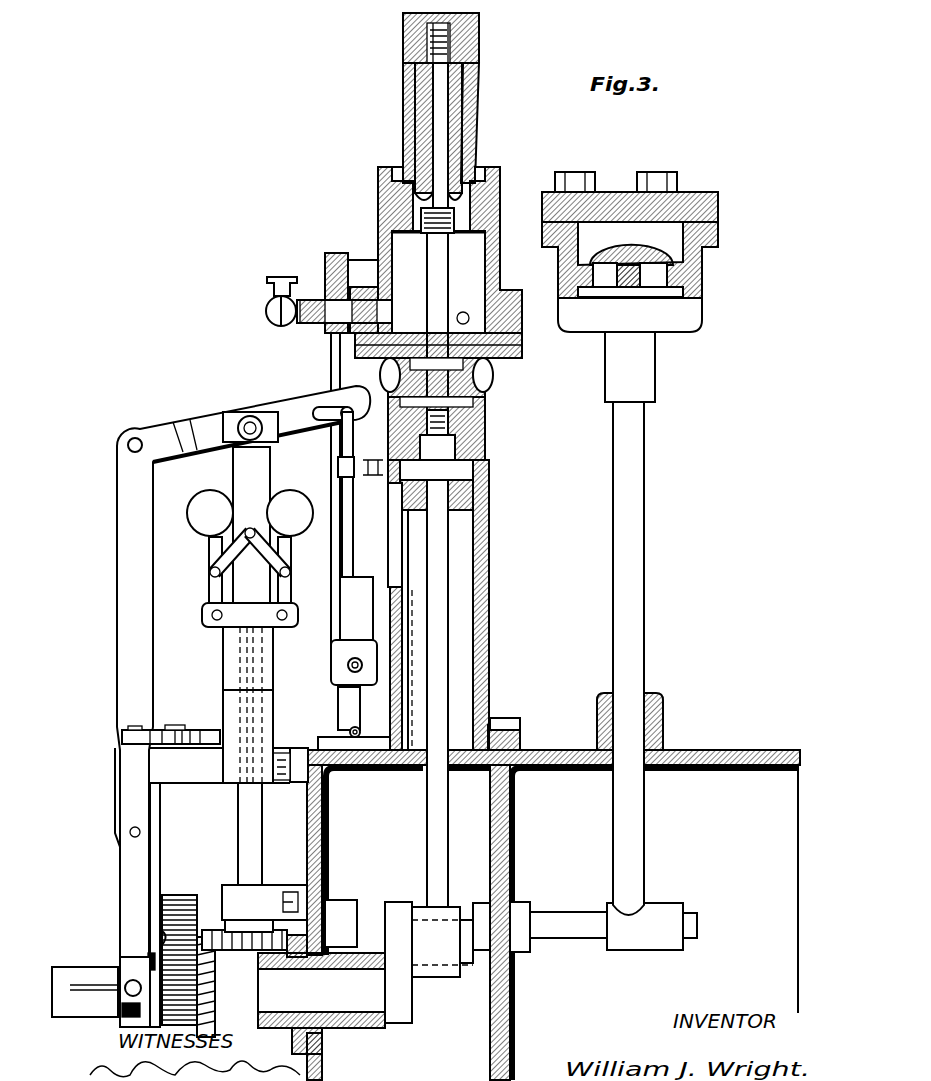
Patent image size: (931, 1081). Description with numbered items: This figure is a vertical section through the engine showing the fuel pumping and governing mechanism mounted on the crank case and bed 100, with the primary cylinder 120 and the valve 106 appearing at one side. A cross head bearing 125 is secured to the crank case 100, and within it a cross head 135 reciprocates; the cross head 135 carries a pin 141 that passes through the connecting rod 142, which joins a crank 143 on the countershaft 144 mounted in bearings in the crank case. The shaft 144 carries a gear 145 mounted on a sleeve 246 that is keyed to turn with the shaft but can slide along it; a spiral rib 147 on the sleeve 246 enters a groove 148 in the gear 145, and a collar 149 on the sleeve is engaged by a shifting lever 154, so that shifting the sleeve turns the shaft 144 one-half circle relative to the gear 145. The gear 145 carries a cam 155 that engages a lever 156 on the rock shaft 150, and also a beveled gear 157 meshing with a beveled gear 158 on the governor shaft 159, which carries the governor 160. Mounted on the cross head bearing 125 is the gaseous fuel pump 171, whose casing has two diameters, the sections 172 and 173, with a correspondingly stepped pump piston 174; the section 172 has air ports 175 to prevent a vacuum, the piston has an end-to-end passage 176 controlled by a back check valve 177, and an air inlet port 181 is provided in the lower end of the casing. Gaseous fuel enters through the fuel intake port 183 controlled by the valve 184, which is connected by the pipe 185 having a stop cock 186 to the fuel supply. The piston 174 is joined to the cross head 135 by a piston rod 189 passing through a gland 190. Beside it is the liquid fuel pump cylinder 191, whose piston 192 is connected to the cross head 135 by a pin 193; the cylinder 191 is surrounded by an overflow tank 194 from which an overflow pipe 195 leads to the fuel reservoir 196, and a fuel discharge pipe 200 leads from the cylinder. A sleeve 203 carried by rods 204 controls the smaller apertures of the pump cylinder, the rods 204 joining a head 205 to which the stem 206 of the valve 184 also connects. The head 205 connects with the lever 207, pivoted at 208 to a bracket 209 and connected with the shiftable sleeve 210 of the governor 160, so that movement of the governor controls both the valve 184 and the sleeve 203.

The crank case and bed 100 is at (330, 836).
The valve 106 is at (660, 250).
The primary cylinder 120 is at (628, 938).
The cross head bearing 125 is at (489, 572).
The cross head 135 is at (482, 445).
The pin 141 is at (462, 470).
The connecting rod 142 is at (489, 680).
The crank 143 is at (394, 902).
The countershaft 144 is at (321, 990).
The gear 145 is at (205, 870).
The spiral rib 147 is at (213, 970).
The groove 148 is at (155, 987).
The collar 149 is at (118, 1020).
The rock shaft 150 is at (561, 932).
The shifting lever 154 is at (122, 880).
The cam 155 is at (325, 1048).
The lever 156 is at (219, 834).
The beveled gear 157 is at (162, 932).
The beveled gear 158 is at (255, 935).
The governor shaft 159 is at (240, 822).
The governor 160 is at (212, 604).
The gaseous fuel pump 171 is at (378, 188).
The casing section 172 is at (492, 210).
The casing section 173 is at (470, 95).
The pump piston 174 is at (403, 110).
The air ports 175 is at (397, 165).
The passage 176 is at (442, 88).
The back check valve 177 is at (479, 18).
The air inlet port 181 is at (475, 347).
The fuel intake port 183 is at (360, 242).
The valve 184 is at (334, 256).
The pipe 185 is at (275, 318).
The stop cock 186 is at (281, 286).
The piston rod 189 is at (438, 292).
The gland 190 is at (470, 372).
The liquid fuel pump cylinder 191 is at (368, 604).
The piston 192 is at (347, 520).
The pin 193 is at (350, 478).
The overflow tank 194 is at (305, 703).
The overflow pipe 195 is at (265, 663).
The fuel reservoir 196 is at (285, 687).
The fuel discharge pipe 200 is at (355, 740).
The sleeve 203 is at (372, 660).
The rods 204 is at (356, 548).
The head 205 is at (330, 412).
The stem 206 is at (331, 358).
The lever 207 is at (196, 421).
The pivot 208 is at (130, 448).
The bracket 209 is at (125, 540).
The shiftable sleeve 210 is at (268, 478).
The sleeve 246 is at (150, 985).